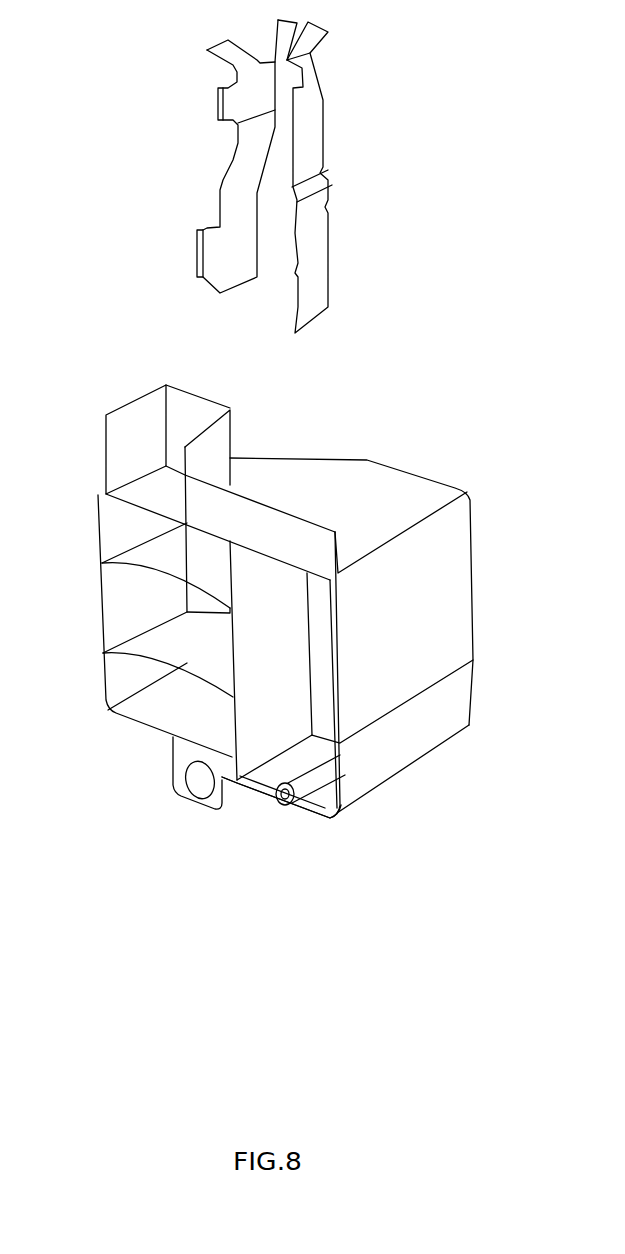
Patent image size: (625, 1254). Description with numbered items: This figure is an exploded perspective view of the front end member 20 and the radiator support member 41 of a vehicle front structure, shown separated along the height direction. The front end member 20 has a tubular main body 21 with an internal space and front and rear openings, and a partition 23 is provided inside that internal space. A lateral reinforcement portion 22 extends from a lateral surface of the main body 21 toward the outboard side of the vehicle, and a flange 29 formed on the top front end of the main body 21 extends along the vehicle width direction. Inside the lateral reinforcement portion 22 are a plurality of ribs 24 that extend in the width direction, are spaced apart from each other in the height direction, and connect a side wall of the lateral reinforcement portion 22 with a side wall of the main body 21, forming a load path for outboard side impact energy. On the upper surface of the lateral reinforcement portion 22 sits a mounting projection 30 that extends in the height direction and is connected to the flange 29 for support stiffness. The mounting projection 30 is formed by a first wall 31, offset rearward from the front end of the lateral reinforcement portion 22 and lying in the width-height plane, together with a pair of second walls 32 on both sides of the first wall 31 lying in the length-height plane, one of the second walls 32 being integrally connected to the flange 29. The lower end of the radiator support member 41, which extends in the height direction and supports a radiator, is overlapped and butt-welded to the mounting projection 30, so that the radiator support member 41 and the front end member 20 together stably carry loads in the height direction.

The radiator support member 41 is at (308, 123).
The mounting projection 30 is at (169, 460).
The first wall 31 is at (203, 407).
The second walls 32 is at (120, 452).
The flange 29 is at (298, 533).
The ribs 24 is at (147, 553).
The partition 23 is at (323, 657).
The lateral reinforcement portion 22 is at (148, 742).
The main body 21 is at (266, 810).
The front end member 20 is at (209, 816).